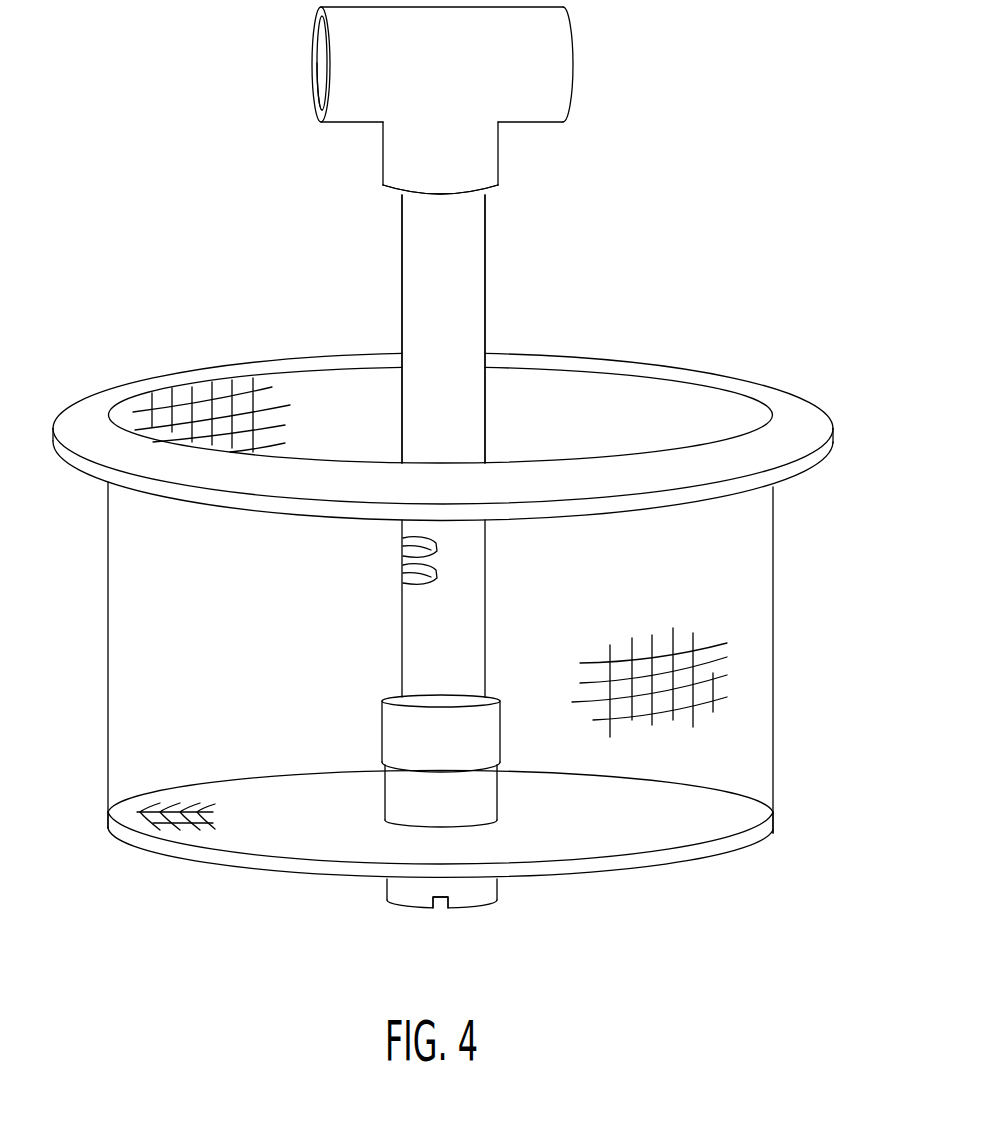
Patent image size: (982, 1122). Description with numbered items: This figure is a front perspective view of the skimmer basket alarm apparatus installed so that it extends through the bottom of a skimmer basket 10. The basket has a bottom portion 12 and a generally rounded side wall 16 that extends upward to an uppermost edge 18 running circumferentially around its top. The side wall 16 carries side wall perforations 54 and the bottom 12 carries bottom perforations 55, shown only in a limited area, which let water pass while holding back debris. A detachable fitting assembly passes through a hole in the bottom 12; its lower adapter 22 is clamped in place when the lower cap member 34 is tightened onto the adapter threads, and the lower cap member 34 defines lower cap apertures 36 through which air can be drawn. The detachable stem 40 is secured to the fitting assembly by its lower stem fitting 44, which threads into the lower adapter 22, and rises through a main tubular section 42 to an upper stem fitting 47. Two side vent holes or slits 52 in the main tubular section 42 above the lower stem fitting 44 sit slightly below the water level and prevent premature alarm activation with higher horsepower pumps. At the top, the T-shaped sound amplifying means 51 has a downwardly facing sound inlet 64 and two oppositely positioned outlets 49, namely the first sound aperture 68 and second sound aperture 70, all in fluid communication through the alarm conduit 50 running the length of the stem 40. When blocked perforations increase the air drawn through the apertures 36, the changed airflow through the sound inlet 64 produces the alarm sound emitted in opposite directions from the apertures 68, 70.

The skimmer basket 10 is at (105, 483).
The bottom portion 12 is at (240, 862).
The side wall 16 is at (773, 648).
The uppermost edge 18 is at (775, 402).
The lower adapter 22 is at (453, 811).
The lower cap member 34 is at (388, 900).
The lower cap apertures 36 is at (440, 906).
The detachable stem 40 is at (456, 301).
The main tubular section 42 is at (477, 225).
The lower stem fitting 44 is at (453, 750).
The upper stem fitting 47 is at (456, 88).
The outlets 49 is at (320, 68).
The alarm conduit 50 is at (456, 175).
The sound amplifying means 51 is at (320, 88).
The side vent holes or slits 52 is at (403, 568).
The side wall perforations 54 is at (180, 408).
The bottom perforations 55 is at (160, 827).
The sound inlet 64 is at (433, 197).
The first sound aperture 68 is at (320, 48).
The second sound aperture 70 is at (573, 67).